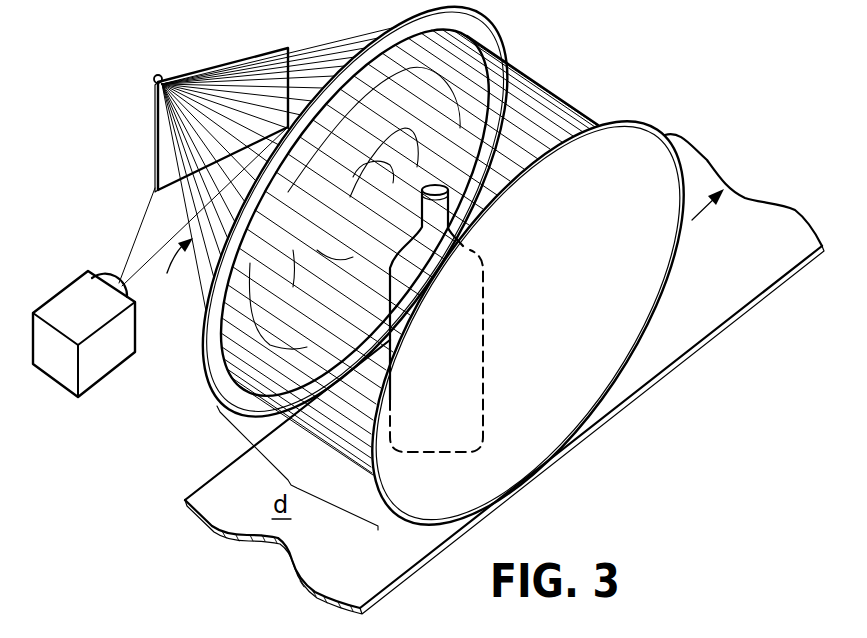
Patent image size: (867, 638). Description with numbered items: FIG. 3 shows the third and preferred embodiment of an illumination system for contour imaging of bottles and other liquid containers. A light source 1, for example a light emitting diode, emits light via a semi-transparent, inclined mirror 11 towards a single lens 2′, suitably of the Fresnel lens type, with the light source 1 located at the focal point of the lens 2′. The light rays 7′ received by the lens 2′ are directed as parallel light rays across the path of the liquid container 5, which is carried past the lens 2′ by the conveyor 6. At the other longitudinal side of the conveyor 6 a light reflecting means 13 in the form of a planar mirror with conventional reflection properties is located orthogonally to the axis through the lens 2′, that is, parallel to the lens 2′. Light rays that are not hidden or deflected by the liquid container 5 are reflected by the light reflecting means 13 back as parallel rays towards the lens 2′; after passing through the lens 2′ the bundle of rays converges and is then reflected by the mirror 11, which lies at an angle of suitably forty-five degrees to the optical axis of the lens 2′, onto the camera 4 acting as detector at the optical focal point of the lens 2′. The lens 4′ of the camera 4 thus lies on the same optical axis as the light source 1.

The light source 1 is at (162, 75).
The semi-transparent inclined mirror 11 is at (160, 130).
The lens 2′ is at (490, 46).
The light reflecting means 13 is at (650, 138).
The liquid container 5 is at (388, 297).
The conveyor 6 is at (705, 178).
The camera 4 is at (57, 302).
The camera lens 4′ is at (110, 280).
The light rays 7′ is at (176, 272).